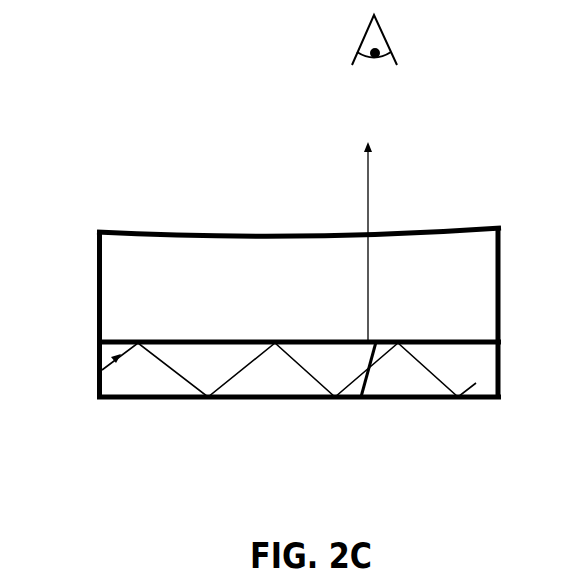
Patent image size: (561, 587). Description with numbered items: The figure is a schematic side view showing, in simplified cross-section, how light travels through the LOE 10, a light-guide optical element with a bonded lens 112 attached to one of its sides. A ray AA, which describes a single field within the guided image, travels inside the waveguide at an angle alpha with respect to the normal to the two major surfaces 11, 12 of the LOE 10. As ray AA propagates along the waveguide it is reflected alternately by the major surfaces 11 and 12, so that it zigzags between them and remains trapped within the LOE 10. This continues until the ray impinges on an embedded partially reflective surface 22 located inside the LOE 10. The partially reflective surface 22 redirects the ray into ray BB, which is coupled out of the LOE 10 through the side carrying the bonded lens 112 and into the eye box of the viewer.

The LOE 10 is at (168, 392).
The bonded lens 112 is at (113, 227).
The major surface 11 is at (485, 334).
The major surface 12 is at (484, 406).
The embedded partially reflective surface 22 is at (366, 389).
The ray AA is at (99, 366).
The redirected ray BB is at (378, 210).